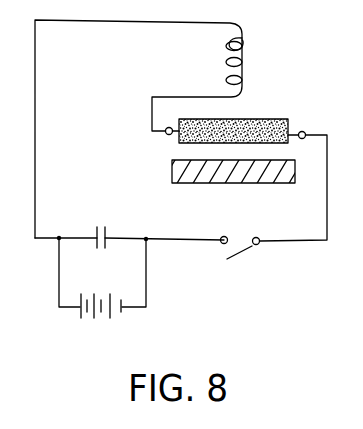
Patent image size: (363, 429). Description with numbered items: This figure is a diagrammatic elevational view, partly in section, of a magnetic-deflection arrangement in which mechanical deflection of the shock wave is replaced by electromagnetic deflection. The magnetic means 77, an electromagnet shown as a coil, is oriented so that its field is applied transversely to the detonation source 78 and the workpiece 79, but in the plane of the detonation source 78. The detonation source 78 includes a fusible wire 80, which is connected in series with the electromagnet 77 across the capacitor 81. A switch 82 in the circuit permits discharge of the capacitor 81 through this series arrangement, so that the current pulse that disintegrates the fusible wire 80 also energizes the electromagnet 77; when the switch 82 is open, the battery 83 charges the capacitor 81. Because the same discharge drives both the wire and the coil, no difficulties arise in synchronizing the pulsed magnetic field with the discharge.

The magnetic means 77 is at (243, 62).
The detonation source 78 is at (284, 120).
The workpiece 79 is at (287, 185).
The fusible wire 80 is at (170, 137).
The capacitor 81 is at (106, 246).
The switch 82 is at (237, 259).
The battery 83 is at (110, 314).